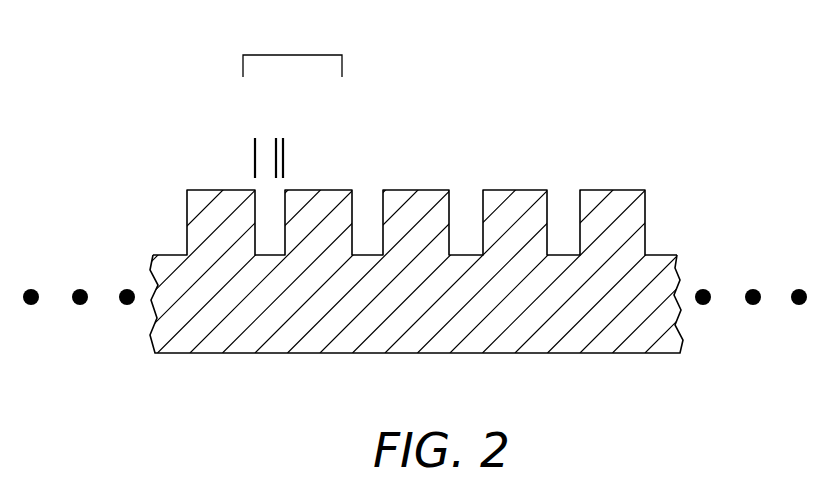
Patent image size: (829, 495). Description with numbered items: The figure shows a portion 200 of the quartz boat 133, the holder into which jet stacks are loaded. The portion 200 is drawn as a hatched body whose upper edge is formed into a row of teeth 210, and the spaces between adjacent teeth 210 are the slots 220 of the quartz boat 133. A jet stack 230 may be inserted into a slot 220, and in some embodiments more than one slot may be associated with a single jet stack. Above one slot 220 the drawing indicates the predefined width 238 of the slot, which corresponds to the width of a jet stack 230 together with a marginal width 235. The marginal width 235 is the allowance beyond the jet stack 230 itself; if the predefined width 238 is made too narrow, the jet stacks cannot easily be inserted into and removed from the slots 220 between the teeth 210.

The quartz boat 133 is at (137, 128).
The portion of the quartz boat 200 is at (358, 353).
The teeth 210 is at (417, 190).
The slots 220 is at (365, 171).
The jet stack 230 is at (263, 137).
The marginal width 235 is at (279, 137).
The predefined width 238 is at (292, 92).